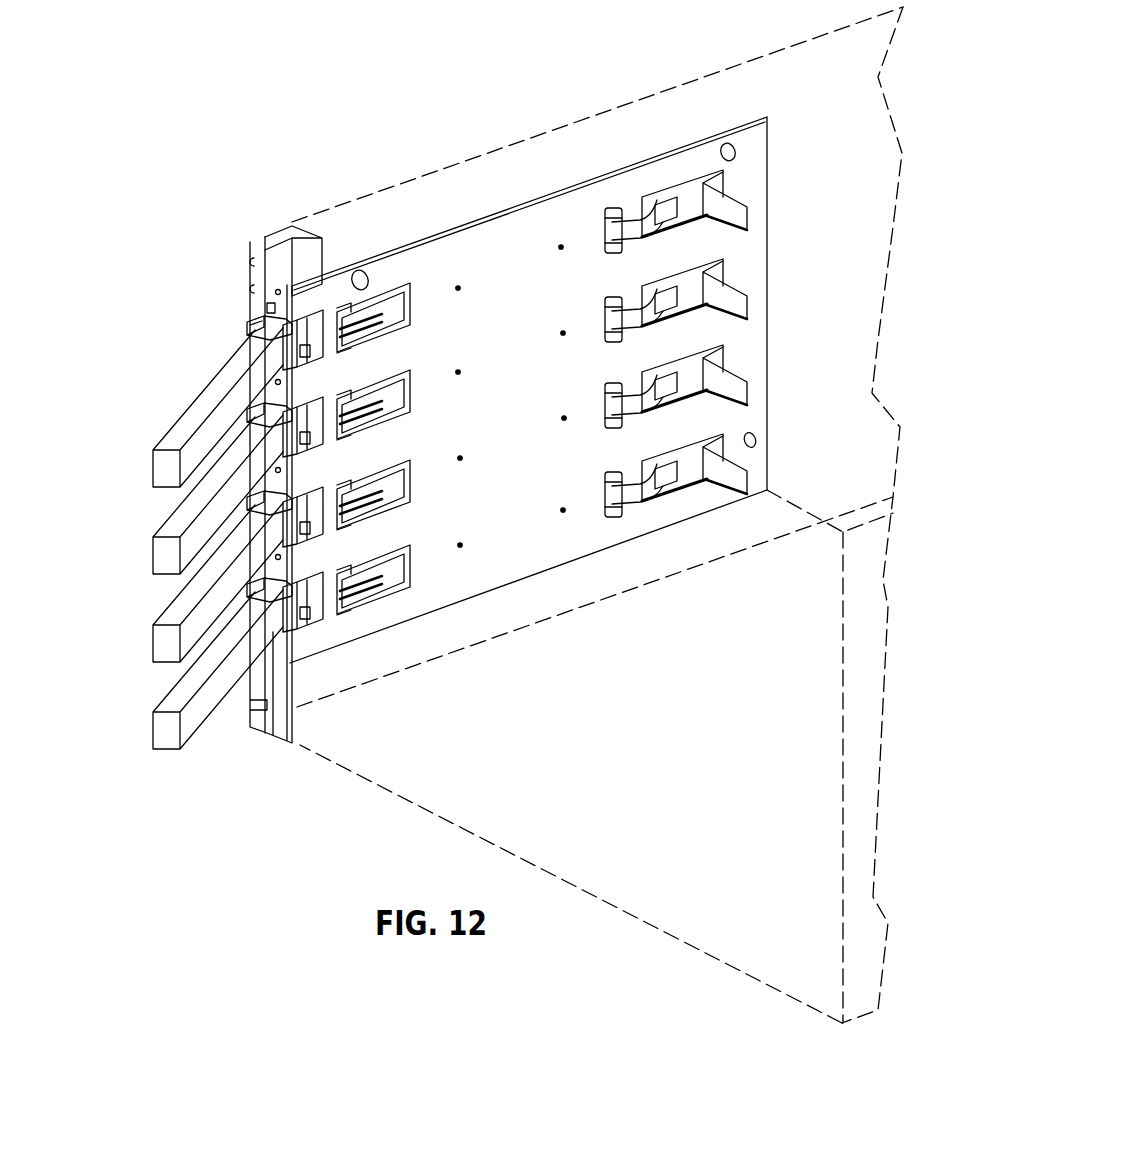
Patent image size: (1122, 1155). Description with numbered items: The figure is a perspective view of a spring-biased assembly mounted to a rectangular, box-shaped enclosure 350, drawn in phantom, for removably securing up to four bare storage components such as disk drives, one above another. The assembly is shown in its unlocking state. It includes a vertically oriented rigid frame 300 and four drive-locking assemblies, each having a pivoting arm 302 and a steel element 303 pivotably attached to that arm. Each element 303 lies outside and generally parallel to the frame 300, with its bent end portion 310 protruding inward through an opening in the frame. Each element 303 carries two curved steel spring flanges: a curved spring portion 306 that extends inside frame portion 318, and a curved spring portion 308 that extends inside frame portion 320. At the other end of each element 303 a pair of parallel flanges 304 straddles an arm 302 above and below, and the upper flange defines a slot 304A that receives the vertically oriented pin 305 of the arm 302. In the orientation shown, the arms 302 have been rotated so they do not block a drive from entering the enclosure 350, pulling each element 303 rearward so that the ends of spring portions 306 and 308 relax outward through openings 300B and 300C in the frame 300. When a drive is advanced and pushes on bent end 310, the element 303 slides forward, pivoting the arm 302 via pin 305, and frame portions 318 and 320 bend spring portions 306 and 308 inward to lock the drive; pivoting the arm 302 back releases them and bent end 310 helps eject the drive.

The rigid frame 300 is at (482, 215).
The opening 300B is at (350, 306).
The opening 300C is at (615, 252).
The pivoting arm 302 is at (180, 422).
The metal element 303 is at (687, 200).
The flanges 304 is at (240, 312).
The slot 304A is at (247, 326).
The pin 305 is at (252, 337).
The curved spring portion 306 is at (403, 318).
The curved spring portion 308 is at (648, 228).
The bent end portion 310 is at (757, 218).
The frame portion 318 is at (357, 333).
The frame portion 320 is at (650, 197).
The enclosure 350 is at (312, 262).